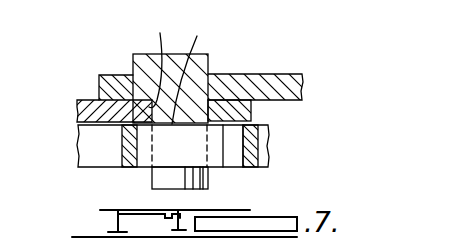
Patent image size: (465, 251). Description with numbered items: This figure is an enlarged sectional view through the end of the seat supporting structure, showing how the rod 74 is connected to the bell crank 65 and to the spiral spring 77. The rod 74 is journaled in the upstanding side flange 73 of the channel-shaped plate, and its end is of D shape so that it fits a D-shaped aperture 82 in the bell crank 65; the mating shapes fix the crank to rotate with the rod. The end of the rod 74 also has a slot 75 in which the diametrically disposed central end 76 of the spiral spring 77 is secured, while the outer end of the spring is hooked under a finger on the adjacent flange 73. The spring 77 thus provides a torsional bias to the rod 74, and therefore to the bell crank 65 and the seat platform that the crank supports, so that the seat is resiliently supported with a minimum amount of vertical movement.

The bell crank 65 is at (84, 107).
The D-shaped aperture 82 is at (162, 59).
The slot 75 is at (198, 68).
The rod 74 is at (196, 68).
The side flange 73 is at (270, 76).
The central end of spiral spring 76 is at (170, 156).
The spiral spring 77 is at (268, 156).